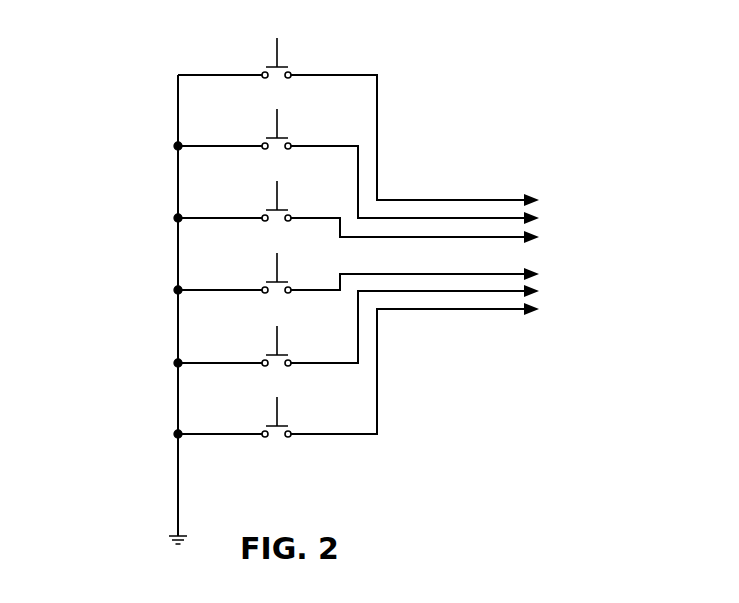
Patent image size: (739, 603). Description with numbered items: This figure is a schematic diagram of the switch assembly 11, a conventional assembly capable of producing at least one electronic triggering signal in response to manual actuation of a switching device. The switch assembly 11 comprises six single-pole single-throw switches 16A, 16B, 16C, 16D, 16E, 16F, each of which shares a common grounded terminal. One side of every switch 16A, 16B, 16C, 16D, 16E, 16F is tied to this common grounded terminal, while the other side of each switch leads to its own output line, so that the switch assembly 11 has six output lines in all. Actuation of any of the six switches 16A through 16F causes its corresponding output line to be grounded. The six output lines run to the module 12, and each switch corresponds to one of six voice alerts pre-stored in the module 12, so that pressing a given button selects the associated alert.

The switch assembly 11 is at (126, 282).
The module 12 is at (608, 254).
The switch 16A is at (262, 61).
The switch 16B is at (262, 132).
The switch 16C is at (262, 204).
The switch 16D is at (262, 276).
The switch 16E is at (262, 349).
The switch 16F is at (262, 420).